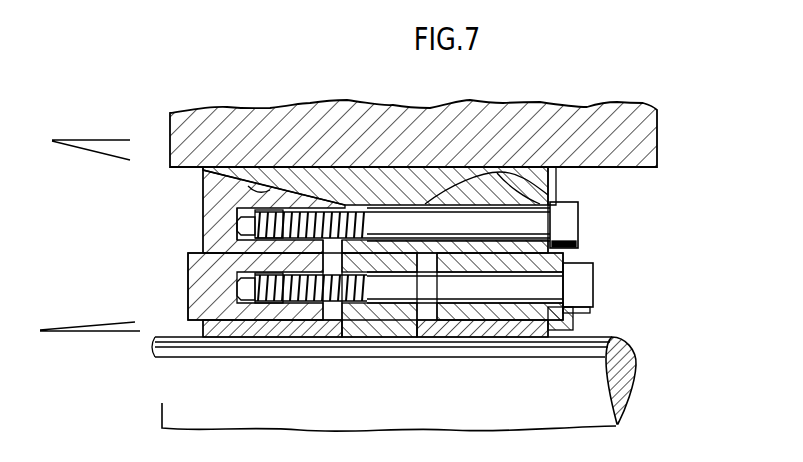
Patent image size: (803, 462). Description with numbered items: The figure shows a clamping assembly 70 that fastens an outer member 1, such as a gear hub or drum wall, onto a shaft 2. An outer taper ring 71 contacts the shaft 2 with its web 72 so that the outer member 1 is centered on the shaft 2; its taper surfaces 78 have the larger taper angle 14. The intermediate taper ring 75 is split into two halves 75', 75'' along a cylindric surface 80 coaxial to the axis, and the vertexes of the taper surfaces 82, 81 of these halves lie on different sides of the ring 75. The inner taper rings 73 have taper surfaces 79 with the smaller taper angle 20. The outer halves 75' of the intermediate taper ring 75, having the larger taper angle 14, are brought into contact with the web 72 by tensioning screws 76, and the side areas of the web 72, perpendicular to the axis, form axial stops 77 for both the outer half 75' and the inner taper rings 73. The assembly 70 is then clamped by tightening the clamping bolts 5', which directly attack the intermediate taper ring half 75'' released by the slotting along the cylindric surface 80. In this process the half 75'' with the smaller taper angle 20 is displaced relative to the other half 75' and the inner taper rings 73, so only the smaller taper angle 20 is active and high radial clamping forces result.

The outer member 1 is at (630, 118).
The shaft 2 is at (182, 403).
The clamping bolts 5' is at (429, 282).
The larger taper angle 14 is at (103, 187).
The smaller taper angle 20 is at (111, 357).
The clamping assembly 70 is at (688, 193).
The outer taper ring 71 is at (377, 188).
The web 72 is at (388, 326).
The inner taper rings 73 is at (250, 330).
The intermediate taper ring 75 is at (668, 256).
The outer half of intermediate taper ring 75' is at (580, 186).
The inner half of intermediate taper ring 75'' is at (571, 350).
The tensioning screws 76 is at (572, 218).
The axial stops 77 is at (336, 305).
The taper surfaces of outer taper ring 78 is at (252, 186).
The taper surfaces of inner taper rings 79 is at (579, 311).
The cylindric surface 80 is at (574, 243).
The taper surface of inner half 81 is at (513, 327).
The taper surface of outer half 82 is at (495, 185).